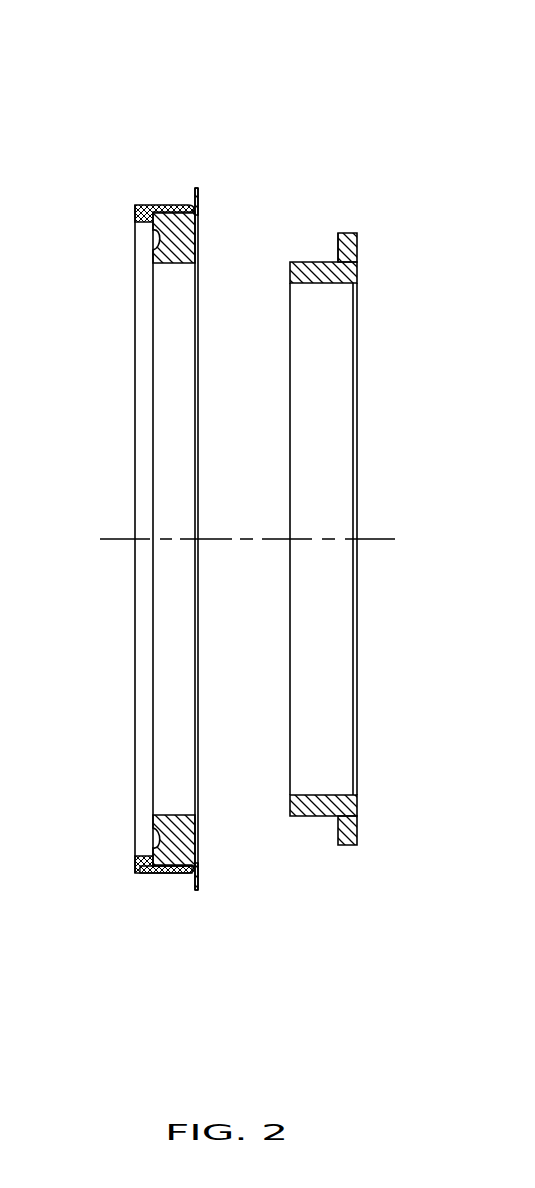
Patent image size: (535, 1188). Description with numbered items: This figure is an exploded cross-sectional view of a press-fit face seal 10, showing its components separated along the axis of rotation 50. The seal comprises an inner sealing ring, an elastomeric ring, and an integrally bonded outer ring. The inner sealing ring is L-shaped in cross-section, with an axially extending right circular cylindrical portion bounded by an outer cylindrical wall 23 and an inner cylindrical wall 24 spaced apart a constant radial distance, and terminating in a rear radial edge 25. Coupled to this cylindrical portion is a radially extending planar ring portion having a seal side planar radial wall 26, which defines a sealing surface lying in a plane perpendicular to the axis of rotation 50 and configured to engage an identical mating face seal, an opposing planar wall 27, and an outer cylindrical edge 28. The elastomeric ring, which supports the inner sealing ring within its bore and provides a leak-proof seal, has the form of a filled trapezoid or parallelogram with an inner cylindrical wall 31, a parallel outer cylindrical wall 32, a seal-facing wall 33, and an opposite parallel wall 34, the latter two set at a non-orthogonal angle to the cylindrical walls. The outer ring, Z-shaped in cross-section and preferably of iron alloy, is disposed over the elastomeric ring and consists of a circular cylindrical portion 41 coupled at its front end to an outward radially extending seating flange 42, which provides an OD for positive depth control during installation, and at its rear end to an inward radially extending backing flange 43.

The face seal 10 is at (136, 76).
The outer cylindrical wall 23 is at (307, 262).
The inner cylindrical wall 24 is at (328, 283).
The rear radial edge 25 is at (290, 273).
The seal side planar radial wall 26 is at (357, 243).
The opposing planar wall 27 is at (336, 256).
The outer cylindrical edge 28 is at (347, 233).
The inner cylindrical wall 31 is at (175, 815).
The outer cylindrical wall 32 is at (153, 873).
The seal-facing wall 33 is at (198, 823).
The opposite parallel wall 34 is at (136, 857).
The circular cylindrical portion 41 is at (185, 205).
The seating flange 42 is at (198, 195).
The backing flange 43 is at (135, 220).
The axis of rotation 50 is at (266, 540).